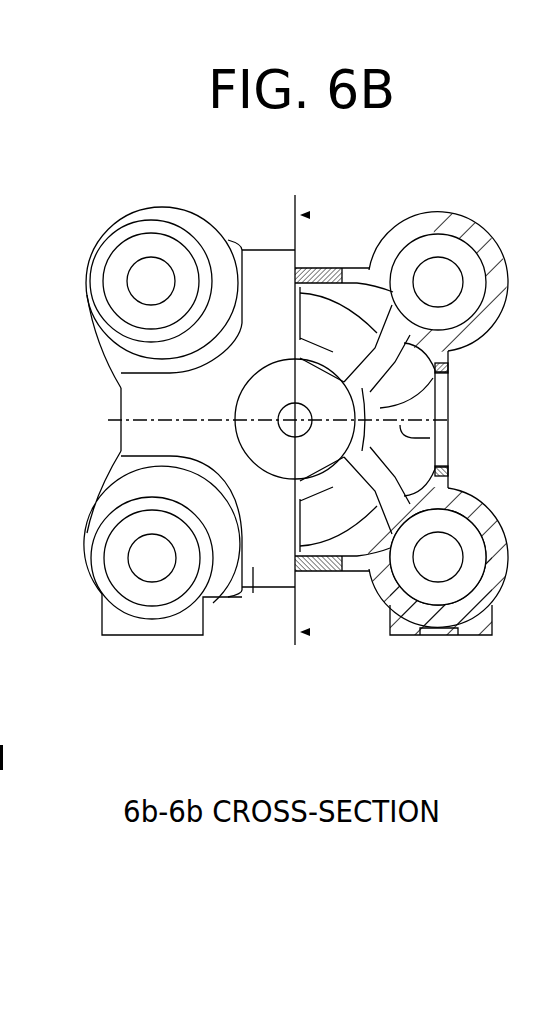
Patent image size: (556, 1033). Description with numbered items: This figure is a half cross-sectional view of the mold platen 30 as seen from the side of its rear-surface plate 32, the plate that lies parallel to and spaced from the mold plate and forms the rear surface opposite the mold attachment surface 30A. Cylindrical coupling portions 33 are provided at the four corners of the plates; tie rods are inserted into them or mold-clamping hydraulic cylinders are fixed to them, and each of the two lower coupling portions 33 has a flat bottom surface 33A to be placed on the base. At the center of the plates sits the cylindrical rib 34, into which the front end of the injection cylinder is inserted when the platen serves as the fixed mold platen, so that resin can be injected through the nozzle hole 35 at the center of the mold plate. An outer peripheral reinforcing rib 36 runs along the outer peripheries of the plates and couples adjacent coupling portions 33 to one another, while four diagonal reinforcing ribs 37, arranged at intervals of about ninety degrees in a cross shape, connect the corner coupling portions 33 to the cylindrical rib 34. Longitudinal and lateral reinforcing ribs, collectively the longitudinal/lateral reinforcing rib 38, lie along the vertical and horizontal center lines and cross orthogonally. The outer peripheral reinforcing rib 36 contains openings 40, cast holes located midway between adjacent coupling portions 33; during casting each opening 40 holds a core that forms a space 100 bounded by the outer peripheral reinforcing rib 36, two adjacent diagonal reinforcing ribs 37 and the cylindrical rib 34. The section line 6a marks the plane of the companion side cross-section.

The mold platen 30 is at (205, 184).
The mold attachment surface 30A is at (253, 595).
The rear-surface plate 32 is at (121, 392).
The coupling portion 33 is at (147, 224).
The bottom surface 33A is at (142, 636).
The cylindrical rib 34 is at (437, 390).
The nozzle hole 35 is at (278, 428).
The outer peripheral reinforcing rib 36 is at (357, 265).
The diagonal reinforcing rib 37 is at (262, 253).
The longitudinal/lateral reinforcing rib 38 is at (302, 313).
The opening 40 is at (342, 268).
The space 100 is at (383, 233).
The section line 6a is at (320, 632).